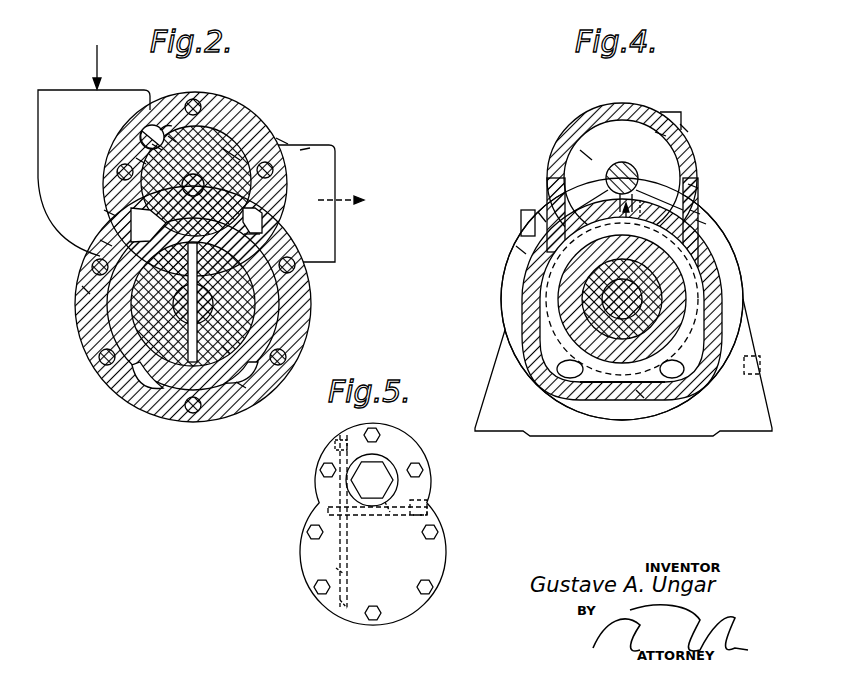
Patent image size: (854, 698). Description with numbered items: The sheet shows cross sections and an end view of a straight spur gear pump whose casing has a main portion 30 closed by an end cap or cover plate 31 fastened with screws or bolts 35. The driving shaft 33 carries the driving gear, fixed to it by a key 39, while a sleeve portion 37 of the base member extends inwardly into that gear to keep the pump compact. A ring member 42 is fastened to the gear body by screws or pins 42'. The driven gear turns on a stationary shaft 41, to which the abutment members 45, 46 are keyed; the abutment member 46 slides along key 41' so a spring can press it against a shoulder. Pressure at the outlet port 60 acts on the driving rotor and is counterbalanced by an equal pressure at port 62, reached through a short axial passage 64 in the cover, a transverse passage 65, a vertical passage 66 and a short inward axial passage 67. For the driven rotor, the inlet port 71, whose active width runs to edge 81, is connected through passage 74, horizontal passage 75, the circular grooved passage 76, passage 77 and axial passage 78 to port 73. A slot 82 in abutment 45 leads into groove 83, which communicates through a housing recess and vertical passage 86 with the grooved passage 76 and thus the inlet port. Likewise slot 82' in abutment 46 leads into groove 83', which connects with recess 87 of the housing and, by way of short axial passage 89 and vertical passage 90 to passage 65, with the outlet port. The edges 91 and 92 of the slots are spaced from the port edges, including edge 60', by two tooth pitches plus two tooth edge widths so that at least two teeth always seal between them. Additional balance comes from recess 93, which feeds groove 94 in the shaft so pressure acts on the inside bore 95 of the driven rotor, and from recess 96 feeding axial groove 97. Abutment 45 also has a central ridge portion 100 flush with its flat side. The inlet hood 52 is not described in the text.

In FIG. 2, the main portion 30 is at (290, 172).
In FIG. 4, the main portion 30 is at (615, 104).
In FIG. 5, the end cap or cover plate 31 is at (303, 579).
In FIG. 2, the driving shaft 33 is at (212, 311).
In FIG. 4, the driving shaft 33 is at (638, 301).
In FIG. 2, the screws or bolts 35 is at (297, 357).
In FIG. 5, the screws or bolts 35 is at (421, 471).
In FIG. 4, the sleeve portion 37 is at (682, 271).
In FIG. 2, the key 39 is at (200, 273).
In FIG. 2, the stationary shaft 41 is at (235, 181).
In FIG. 4, the stationary shaft 41 is at (594, 141).
In FIG. 2, the key 41' is at (263, 128).
In FIG. 4, the ring member 42 is at (622, 419).
In FIG. 2, the screws or pins 42' is at (130, 366).
In FIG. 4, the screws or pins 42' is at (552, 345).
In FIG. 4, the abutment member 45 is at (586, 155).
In FIG. 2, the abutment member 46 is at (185, 186).
In FIG. 2, the inlet hood 52 is at (80, 88).
In FIG. 4, the inlet hood 52 is at (662, 110).
In FIG. 2, the outlet port 60 is at (286, 233).
In FIG. 4, the outlet port 60 is at (734, 215).
In FIG. 2, the partition wall surface 60' is at (285, 219).
In FIG. 4, the partition wall surface 60' is at (717, 221).
In FIG. 2, the port 62 is at (147, 383).
In FIG. 5, the short axial passage 64 is at (416, 505).
In FIG. 5, the transverse passage 65 is at (388, 511).
In FIG. 5, the vertical passage 66 is at (341, 573).
In FIG. 5, the short inward axial passage 67 is at (326, 607).
In FIG. 2, the inlet port 71 is at (108, 213).
In FIG. 4, the inlet port 71 is at (549, 226).
In FIG. 2, the port 73 is at (242, 386).
In FIG. 4, the port 73 is at (673, 382).
In FIG. 2, the passage 74 is at (107, 244).
In FIG. 4, the passage 74 is at (545, 239).
In FIG. 4, the horizontal passage 75 is at (540, 217).
In FIG. 4, the circular grooved passage 76 is at (528, 316).
In FIG. 4, the passage 77 is at (748, 355).
In FIG. 2, the axial passage 78 is at (243, 380).
In FIG. 4, the axial passage 78 is at (686, 377).
In FIG. 2, the edge 81 is at (132, 219).
In FIG. 2, the slot 82 is at (195, 176).
In FIG. 4, the slot 82 is at (644, 144).
In FIG. 2, the slot 82' is at (131, 133).
In FIG. 2, the groove 83 is at (323, 136).
In FIG. 2, the groove 83' is at (144, 116).
In FIG. 4, the vertical passage 86 is at (692, 187).
In FIG. 2, the recess 87 is at (162, 128).
In FIG. 4, the short axial passage 89 is at (685, 128).
In FIG. 5, the short axial passage 89 is at (336, 448).
In FIG. 5, the vertical passage 90 is at (341, 490).
In FIG. 2, the edge 91 is at (282, 141).
In FIG. 2, the edge 92 is at (157, 147).
In FIG. 4, the recess 93 is at (696, 213).
In FIG. 4, the groove 94 is at (650, 206).
In FIG. 4, the inside bore 95 is at (684, 170).
In FIG. 4, the recess 96 is at (590, 197).
In FIG. 4, the axial groove 97 is at (612, 203).
In FIG. 4, the central ridge portion 100 is at (640, 220).